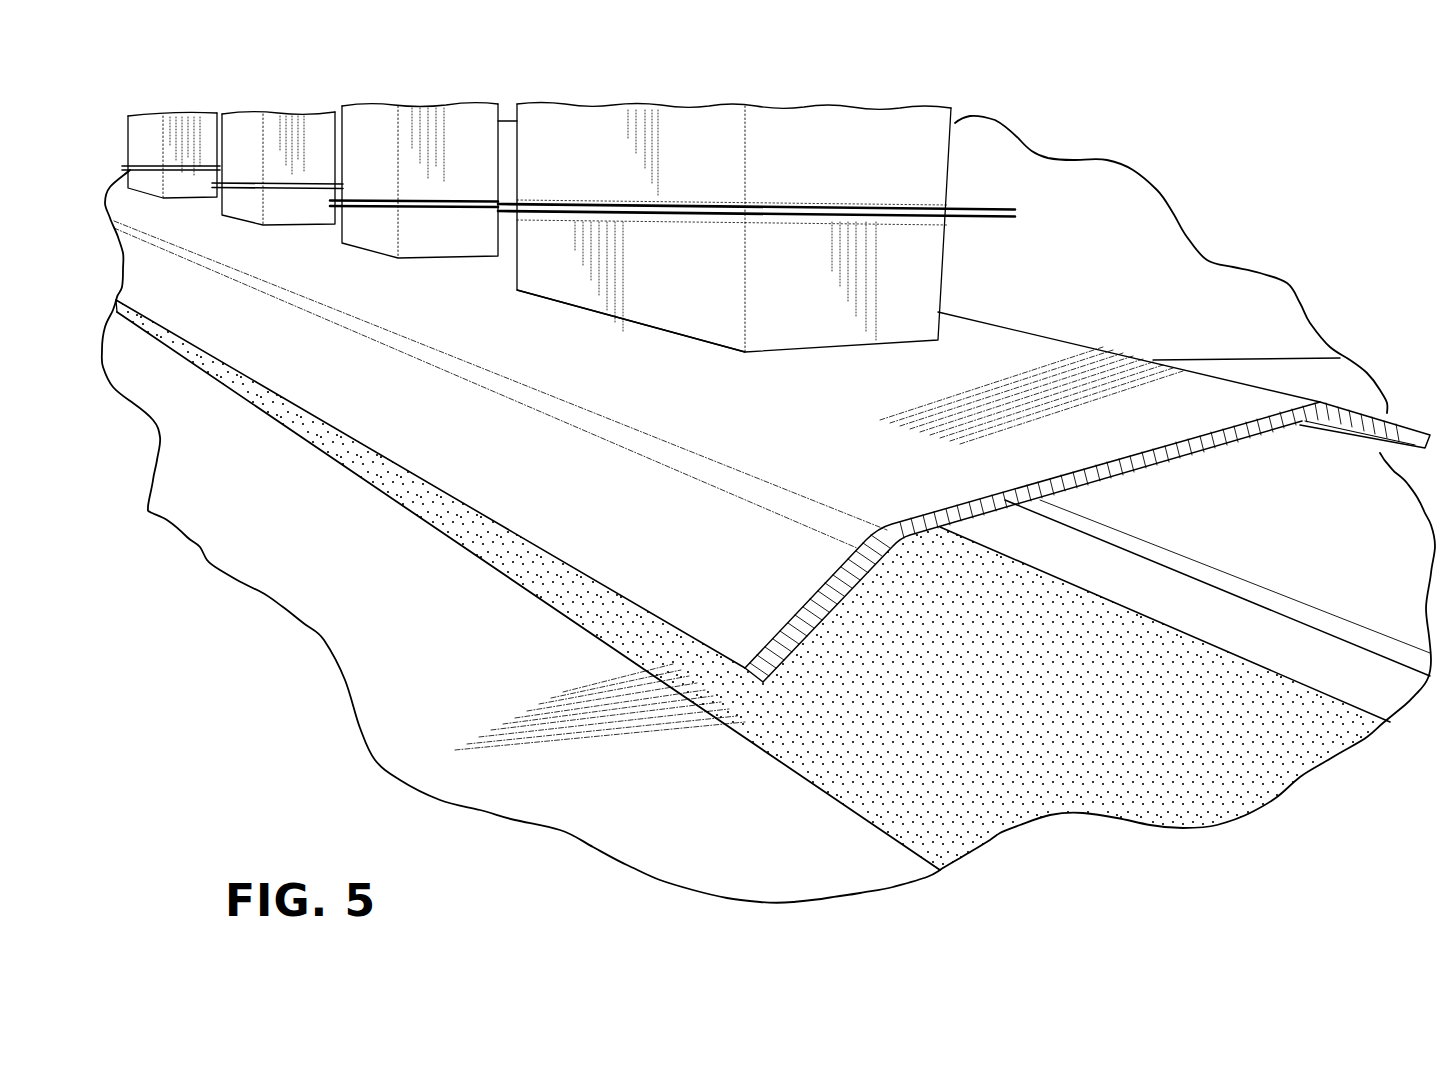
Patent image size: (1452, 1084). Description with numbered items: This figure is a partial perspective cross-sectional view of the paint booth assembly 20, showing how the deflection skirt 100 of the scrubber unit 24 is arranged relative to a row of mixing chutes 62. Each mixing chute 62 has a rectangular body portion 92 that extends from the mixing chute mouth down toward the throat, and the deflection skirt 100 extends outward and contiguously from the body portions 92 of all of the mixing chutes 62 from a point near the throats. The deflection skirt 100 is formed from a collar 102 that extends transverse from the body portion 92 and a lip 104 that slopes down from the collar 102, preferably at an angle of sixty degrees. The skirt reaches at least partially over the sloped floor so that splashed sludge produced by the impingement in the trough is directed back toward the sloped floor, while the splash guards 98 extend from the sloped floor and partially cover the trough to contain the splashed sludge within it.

The paint booth assembly 20 is at (1167, 152).
The scrubber unit 24 is at (128, 145).
The mixing chute 62 is at (951, 168).
The body portion 92 is at (567, 275).
The splash guards 98 is at (1277, 672).
The deflection skirt 100 is at (895, 548).
The collar 102 is at (940, 457).
The lip 104 is at (700, 645).